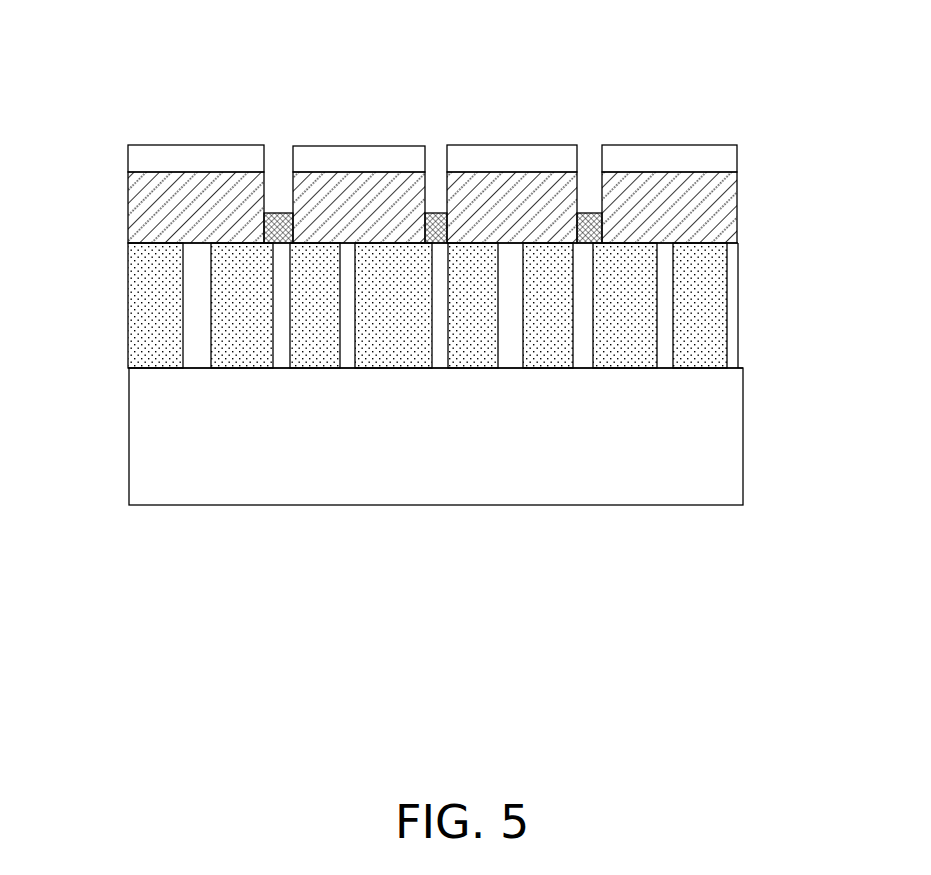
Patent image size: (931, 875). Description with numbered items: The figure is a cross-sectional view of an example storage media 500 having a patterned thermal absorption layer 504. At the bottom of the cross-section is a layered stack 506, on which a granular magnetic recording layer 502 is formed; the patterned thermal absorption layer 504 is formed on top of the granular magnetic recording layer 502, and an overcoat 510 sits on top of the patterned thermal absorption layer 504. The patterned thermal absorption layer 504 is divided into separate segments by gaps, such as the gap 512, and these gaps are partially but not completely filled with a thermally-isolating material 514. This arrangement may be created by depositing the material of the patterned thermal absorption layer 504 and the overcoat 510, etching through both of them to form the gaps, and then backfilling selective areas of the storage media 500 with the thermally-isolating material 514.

The storage media 500 is at (198, 59).
The granular magnetic recording layer 502 is at (740, 368).
The patterned thermal absorption layer 504 is at (740, 243).
The layered stack 506 is at (745, 503).
The overcoat 510 is at (738, 158).
The gap 512 is at (590, 152).
The thermally-isolating material 514 is at (434, 227).